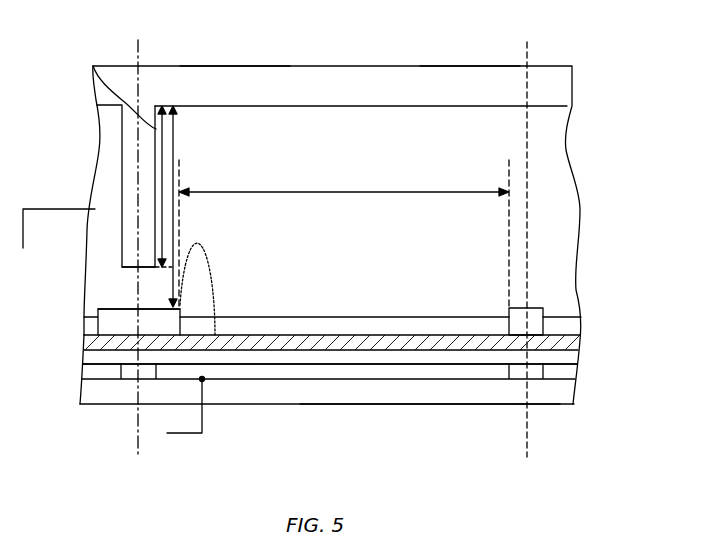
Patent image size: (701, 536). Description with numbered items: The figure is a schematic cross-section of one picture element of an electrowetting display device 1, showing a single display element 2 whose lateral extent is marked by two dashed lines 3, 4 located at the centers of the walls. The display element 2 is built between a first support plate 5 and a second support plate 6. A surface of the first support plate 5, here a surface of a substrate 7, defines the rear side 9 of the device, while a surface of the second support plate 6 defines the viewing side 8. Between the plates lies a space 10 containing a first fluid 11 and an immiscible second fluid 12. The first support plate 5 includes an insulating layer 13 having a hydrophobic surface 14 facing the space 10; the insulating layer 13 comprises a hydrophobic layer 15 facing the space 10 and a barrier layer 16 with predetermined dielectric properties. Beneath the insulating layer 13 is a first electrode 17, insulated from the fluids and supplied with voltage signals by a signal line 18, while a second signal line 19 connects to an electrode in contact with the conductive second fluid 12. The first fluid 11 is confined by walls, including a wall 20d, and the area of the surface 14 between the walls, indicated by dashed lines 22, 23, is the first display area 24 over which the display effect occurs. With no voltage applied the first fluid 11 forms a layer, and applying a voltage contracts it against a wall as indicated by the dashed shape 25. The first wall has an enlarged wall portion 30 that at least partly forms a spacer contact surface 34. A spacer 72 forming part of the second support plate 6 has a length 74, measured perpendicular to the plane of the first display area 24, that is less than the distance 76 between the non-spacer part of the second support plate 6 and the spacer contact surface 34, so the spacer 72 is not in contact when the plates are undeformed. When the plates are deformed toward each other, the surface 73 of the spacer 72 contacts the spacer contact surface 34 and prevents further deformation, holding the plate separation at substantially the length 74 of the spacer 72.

The electrowetting display device 1 is at (645, 34).
The display element 2 is at (331, 27).
The dashed line 3 is at (138, 50).
The dashed line 4 is at (527, 50).
The first support plate 5 is at (631, 317).
The second support plate 6 is at (468, 80).
The substrate 7 is at (553, 398).
The viewing side 8 is at (231, 66).
The rear side 9 is at (291, 405).
The space 10 is at (398, 133).
The first fluid 11 is at (476, 325).
The second fluid 12 is at (573, 196).
The insulating layer 13 is at (588, 335).
The surface 14 is at (412, 335).
The hydrophobic layer 15 is at (347, 345).
The barrier layer 16 is at (278, 350).
The first electrode 17 is at (400, 372).
The signal line 18 is at (185, 437).
The second signal line 19 is at (46, 209).
The wall 20d is at (536, 322).
The dashed line 22 is at (509, 157).
The dashed line 23 is at (179, 157).
The first display area 24 is at (344, 181).
The dashed shape 25 is at (200, 246).
The enlarged wall portion 30 is at (106, 328).
The spacer contact surface 34 is at (107, 311).
The spacer 72 is at (122, 136).
The surface of the spacer 73 is at (120, 273).
The length of the spacer 74 is at (94, 71).
The distance 76 is at (178, 130).